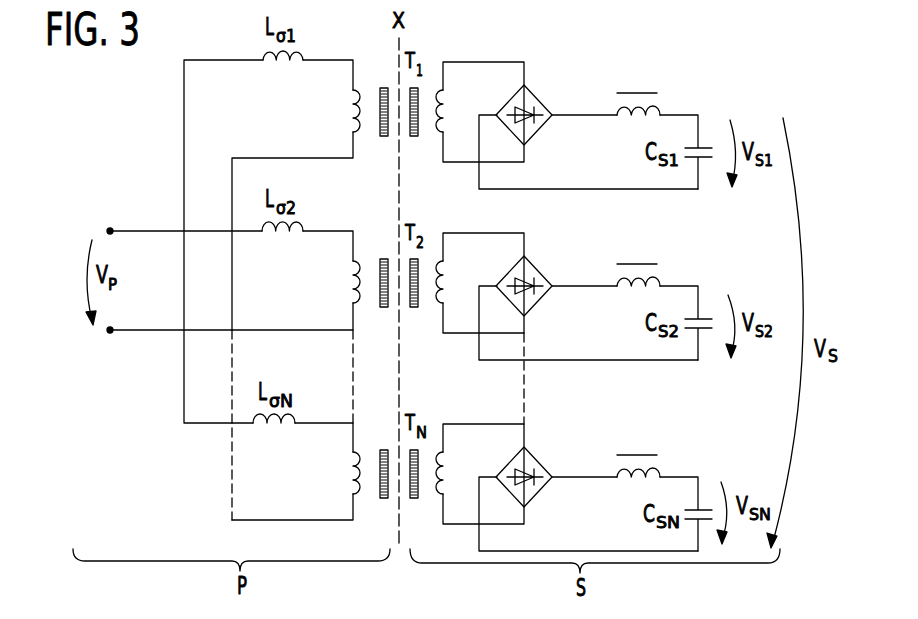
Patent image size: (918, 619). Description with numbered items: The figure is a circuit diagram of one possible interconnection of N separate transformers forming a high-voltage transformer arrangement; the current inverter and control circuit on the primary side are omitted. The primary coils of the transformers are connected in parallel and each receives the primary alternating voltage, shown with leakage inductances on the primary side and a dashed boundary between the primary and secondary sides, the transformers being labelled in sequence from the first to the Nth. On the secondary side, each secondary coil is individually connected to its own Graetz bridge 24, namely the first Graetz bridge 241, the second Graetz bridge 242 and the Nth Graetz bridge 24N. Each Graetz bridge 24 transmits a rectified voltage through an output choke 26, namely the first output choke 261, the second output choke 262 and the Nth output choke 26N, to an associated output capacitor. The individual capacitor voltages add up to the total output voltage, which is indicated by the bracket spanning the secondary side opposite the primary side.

The Graetz bridge 24 is at (534, 275).
The Graetz bridge 241 is at (542, 96).
The Graetz bridge 242 is at (542, 267).
The Graetz bridge 24N is at (542, 458).
The output choke 26 is at (636, 256).
The output choke 261 is at (639, 92).
The output choke 262 is at (639, 263).
The output choke 26N is at (639, 454).